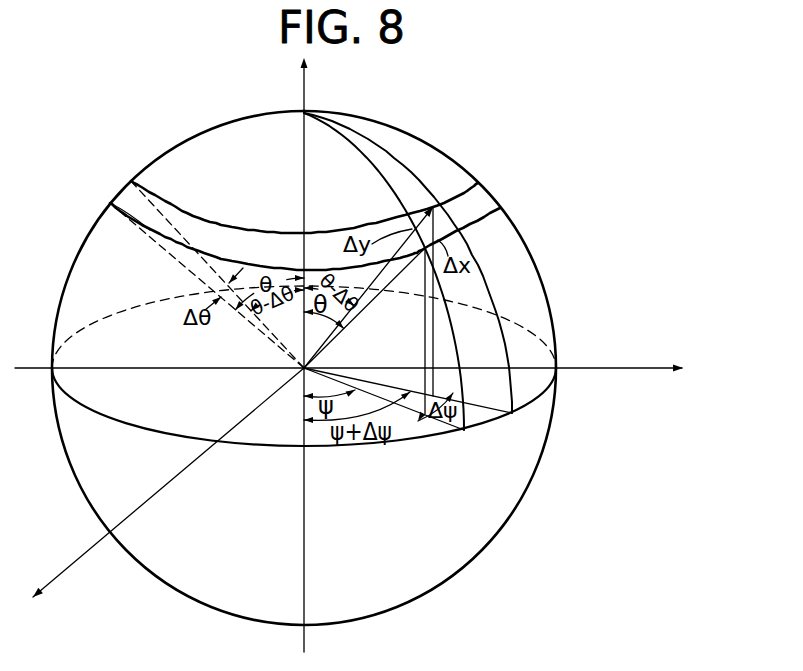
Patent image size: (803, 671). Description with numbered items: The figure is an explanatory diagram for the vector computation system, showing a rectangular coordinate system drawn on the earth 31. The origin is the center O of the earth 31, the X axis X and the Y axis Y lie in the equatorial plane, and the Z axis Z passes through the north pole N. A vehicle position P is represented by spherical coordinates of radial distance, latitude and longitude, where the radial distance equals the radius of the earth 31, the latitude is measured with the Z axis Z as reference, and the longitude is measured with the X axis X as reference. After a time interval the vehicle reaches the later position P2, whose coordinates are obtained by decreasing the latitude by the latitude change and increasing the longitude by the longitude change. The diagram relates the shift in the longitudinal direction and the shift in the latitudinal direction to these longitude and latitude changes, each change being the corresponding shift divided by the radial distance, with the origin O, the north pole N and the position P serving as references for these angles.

The earth 31 is at (473, 562).
The vehicle position P is at (425, 248).
The vehicle position after elapse of time P2 is at (433, 207).
The center of the earth O is at (291, 369).
The north pole N is at (293, 99).
The X axis X is at (160, 493).
The Y axis Y is at (357, 370).
The Z axis Z is at (294, 353).